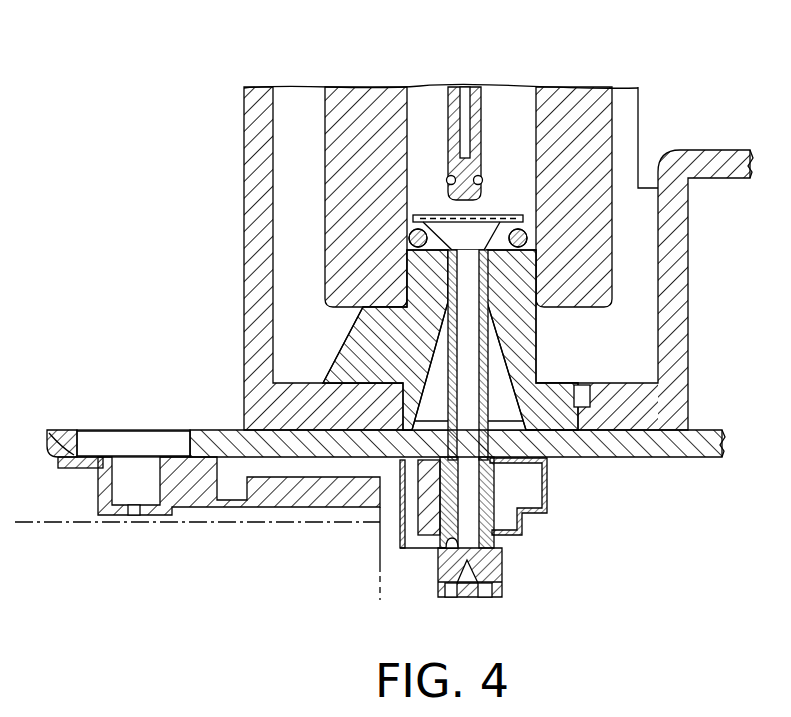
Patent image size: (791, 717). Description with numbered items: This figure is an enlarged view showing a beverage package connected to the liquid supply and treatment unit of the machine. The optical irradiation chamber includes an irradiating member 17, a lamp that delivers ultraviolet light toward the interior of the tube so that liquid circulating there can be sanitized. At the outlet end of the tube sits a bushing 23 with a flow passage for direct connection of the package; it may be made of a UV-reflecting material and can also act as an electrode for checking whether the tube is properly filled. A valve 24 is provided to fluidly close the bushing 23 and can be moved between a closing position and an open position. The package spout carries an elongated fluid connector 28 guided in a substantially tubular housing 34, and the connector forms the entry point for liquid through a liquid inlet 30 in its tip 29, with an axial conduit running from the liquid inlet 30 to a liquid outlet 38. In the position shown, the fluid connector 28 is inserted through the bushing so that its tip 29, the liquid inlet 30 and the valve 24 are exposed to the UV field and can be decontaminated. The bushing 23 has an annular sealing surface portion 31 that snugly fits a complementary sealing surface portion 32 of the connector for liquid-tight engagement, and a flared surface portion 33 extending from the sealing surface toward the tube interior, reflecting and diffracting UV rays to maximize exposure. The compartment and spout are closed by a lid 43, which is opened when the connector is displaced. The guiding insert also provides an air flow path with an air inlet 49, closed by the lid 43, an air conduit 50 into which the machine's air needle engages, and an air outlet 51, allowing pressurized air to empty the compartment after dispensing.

The irradiating member 17 is at (569, 122).
The valve 24 is at (452, 110).
The flared surface portion 33 is at (445, 240).
The annular sealing surface portion 31 is at (450, 281).
The liquid inlet 30 is at (527, 240).
The tip 29 is at (512, 256).
The complementary sealing surface portion 32 is at (462, 318).
The fluid connector 28 is at (458, 374).
The bushing 23 is at (550, 412).
The lid 43 is at (66, 445).
The air inlet 49 is at (136, 452).
The air conduit 50 is at (130, 494).
The air outlet 51 is at (134, 508).
The housing 34 is at (507, 524).
The liquid outlet 38 is at (447, 540).